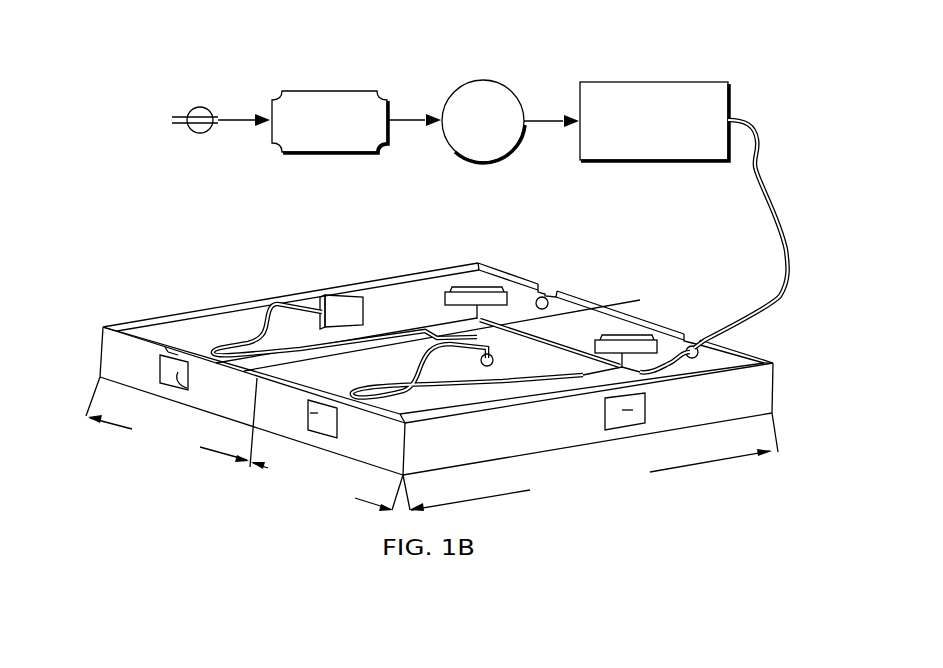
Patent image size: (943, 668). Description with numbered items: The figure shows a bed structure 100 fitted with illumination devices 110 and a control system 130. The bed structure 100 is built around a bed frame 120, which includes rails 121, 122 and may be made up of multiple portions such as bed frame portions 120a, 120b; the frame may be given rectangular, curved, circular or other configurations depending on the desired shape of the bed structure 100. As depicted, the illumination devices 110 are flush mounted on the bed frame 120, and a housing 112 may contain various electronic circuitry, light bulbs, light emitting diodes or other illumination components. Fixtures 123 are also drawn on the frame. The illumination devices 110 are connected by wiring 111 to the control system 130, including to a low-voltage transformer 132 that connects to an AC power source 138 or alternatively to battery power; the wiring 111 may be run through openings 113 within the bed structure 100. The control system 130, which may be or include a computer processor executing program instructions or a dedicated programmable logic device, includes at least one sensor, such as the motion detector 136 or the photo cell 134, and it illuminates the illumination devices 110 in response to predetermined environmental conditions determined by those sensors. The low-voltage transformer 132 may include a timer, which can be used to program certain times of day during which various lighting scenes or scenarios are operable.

The bed structure 100 is at (212, 241).
The illumination devices 110 is at (310, 413).
The wiring 111 is at (258, 302).
The housing 112 is at (365, 300).
The openings 113 is at (697, 336).
The bed frame 120 is at (745, 392).
The bed frame portion 120a is at (553, 285).
The bed frame portion 120b is at (661, 313).
The rail 121 is at (200, 311).
The rail 122 is at (113, 347).
The light fixture 123 is at (475, 290).
The control system 130 is at (243, 37).
The low-voltage transformer 132 is at (655, 82).
The photo cell 134 is at (482, 80).
The motion detector 136 is at (329, 90).
The AC power source 138 is at (200, 107).